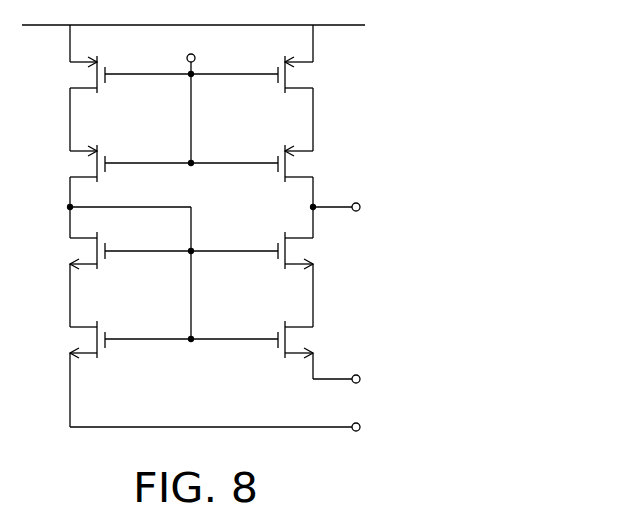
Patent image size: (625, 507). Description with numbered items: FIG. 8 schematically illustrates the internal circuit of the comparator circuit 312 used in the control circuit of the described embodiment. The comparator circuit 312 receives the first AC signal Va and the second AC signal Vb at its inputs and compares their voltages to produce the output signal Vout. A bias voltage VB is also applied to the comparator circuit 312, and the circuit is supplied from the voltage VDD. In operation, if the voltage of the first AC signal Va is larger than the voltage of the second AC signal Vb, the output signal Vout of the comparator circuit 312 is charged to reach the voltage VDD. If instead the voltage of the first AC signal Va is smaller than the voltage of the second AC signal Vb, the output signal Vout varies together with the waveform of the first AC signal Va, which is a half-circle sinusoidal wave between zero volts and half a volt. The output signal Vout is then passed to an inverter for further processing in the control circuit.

The comparator circuit 312 is at (482, 468).
The voltage VDD is at (217, 28).
The element VB is at (207, 98).
The output signal Vout is at (364, 209).
The first AC signal Va is at (353, 372).
The second AC signal Vb is at (232, 397).